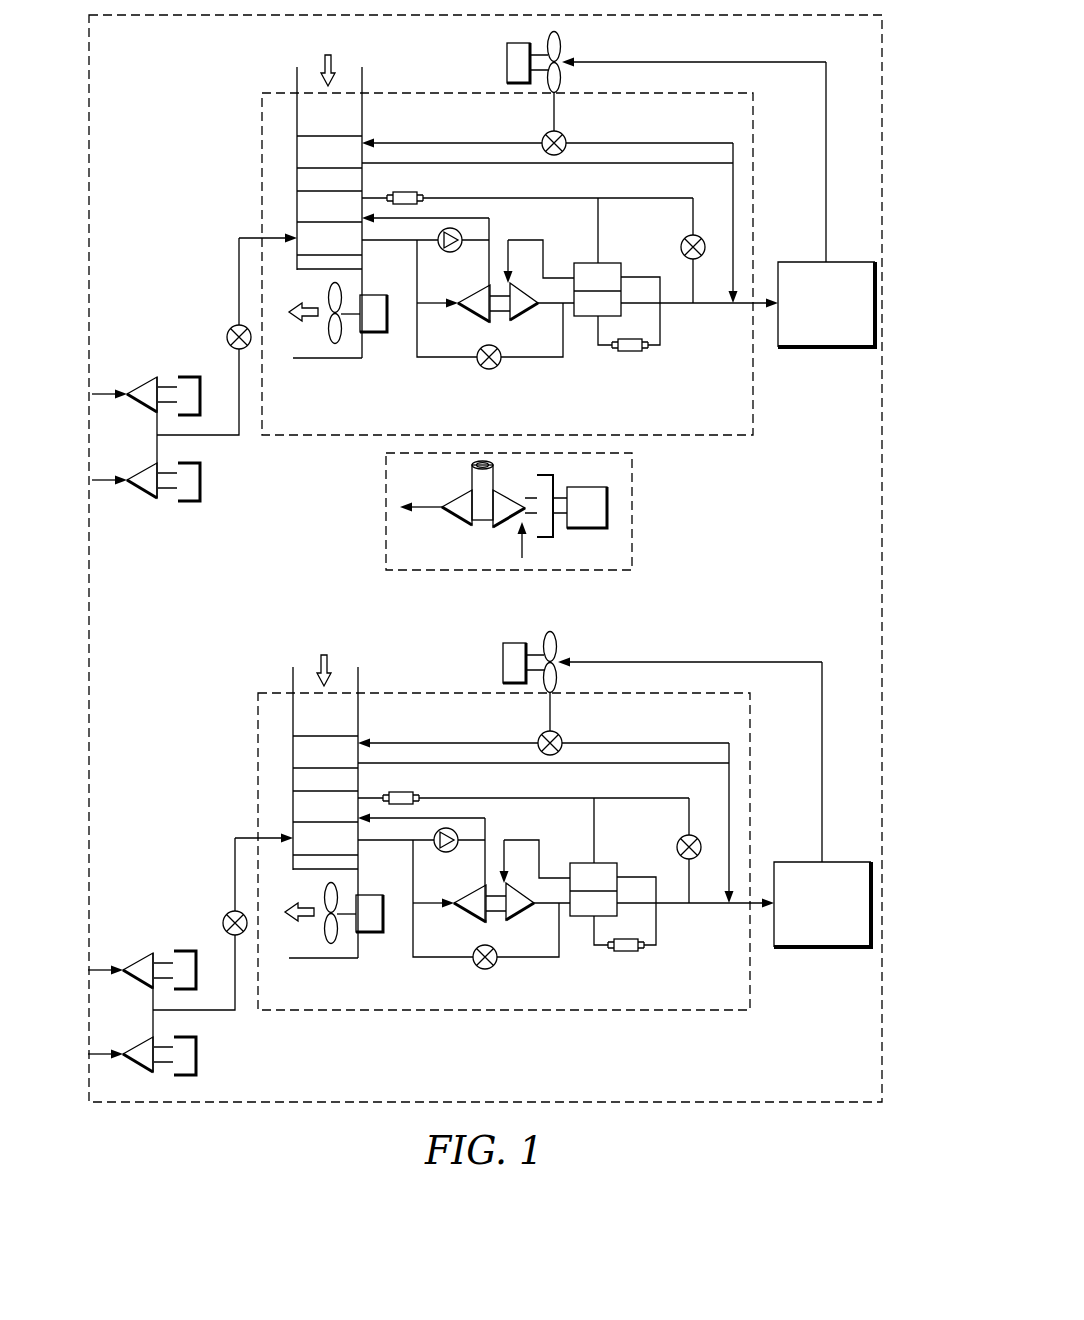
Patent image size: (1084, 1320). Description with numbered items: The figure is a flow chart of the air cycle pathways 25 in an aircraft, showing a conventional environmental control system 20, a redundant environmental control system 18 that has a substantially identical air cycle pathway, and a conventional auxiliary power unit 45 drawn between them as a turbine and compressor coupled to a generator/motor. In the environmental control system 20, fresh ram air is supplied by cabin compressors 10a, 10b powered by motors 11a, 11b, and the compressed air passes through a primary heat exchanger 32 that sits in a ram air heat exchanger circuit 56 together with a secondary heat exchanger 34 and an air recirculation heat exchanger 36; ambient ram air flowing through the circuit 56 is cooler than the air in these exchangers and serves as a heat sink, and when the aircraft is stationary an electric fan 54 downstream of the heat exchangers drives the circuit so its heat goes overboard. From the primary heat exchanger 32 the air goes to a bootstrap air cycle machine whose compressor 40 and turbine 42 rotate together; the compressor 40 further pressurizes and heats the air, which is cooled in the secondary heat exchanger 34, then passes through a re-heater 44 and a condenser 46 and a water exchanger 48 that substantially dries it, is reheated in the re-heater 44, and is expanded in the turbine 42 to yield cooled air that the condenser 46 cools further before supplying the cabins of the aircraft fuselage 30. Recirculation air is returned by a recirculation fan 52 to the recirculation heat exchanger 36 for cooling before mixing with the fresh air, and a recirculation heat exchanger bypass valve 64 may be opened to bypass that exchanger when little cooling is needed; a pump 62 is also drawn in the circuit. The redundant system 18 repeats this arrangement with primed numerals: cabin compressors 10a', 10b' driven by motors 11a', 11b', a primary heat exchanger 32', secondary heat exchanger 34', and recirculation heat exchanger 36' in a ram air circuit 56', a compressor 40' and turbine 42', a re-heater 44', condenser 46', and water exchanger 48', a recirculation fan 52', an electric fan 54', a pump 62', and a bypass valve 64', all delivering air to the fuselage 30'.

The air cycle pathways 25 is at (846, 15).
The environmental control system 20 is at (753, 128).
The redundant environmental control system 18 is at (749, 728).
The cabin compressor 10a is at (124, 387).
The cabin compressor 10b is at (124, 473).
The motor 11a is at (196, 384).
The motor 11b is at (198, 470).
The cabin compressor 10a' is at (120, 961).
The cabin compressor 10b' is at (120, 1046).
The motor 11a' is at (182, 949).
The motor 11b' is at (208, 1056).
The aircraft fuselage 30 is at (830, 293).
The aircraft fuselage 30' is at (828, 893).
The primary heat exchanger 32 is at (316, 267).
The secondary heat exchanger 34 is at (299, 206).
The air recirculation heat exchanger 36 is at (299, 152).
The ram air heat exchanger circuit 56 is at (305, 206).
The primary heat exchanger 32' is at (310, 867).
The secondary heat exchanger 34' is at (293, 806).
The air recirculation heat exchanger 36' is at (293, 752).
The ram air heat exchanger circuit 56' is at (299, 806).
The compressor 40 is at (463, 312).
The turbine 42 is at (535, 314).
The re-heater 44 is at (611, 278).
The condenser 46 is at (616, 319).
The water exchanger 48 is at (646, 358).
The compressor 40' is at (455, 913).
The turbine 42' is at (531, 914).
The re-heater 44' is at (610, 878).
The condenser 46' is at (609, 918).
The water exchanger 48' is at (645, 958).
The recirculation fan 52 is at (519, 76).
The electric fan 54 is at (349, 307).
The pump 62 is at (452, 262).
The recirculation heat exchanger bypass valve 64 is at (572, 137).
The recirculation fan 52' is at (514, 675).
The electric fan 54' is at (348, 907).
The pump of second pack 62' is at (450, 863).
The recirculation heat exchanger bypass valve 64' is at (571, 734).
The auxiliary power unit 45 is at (660, 511).